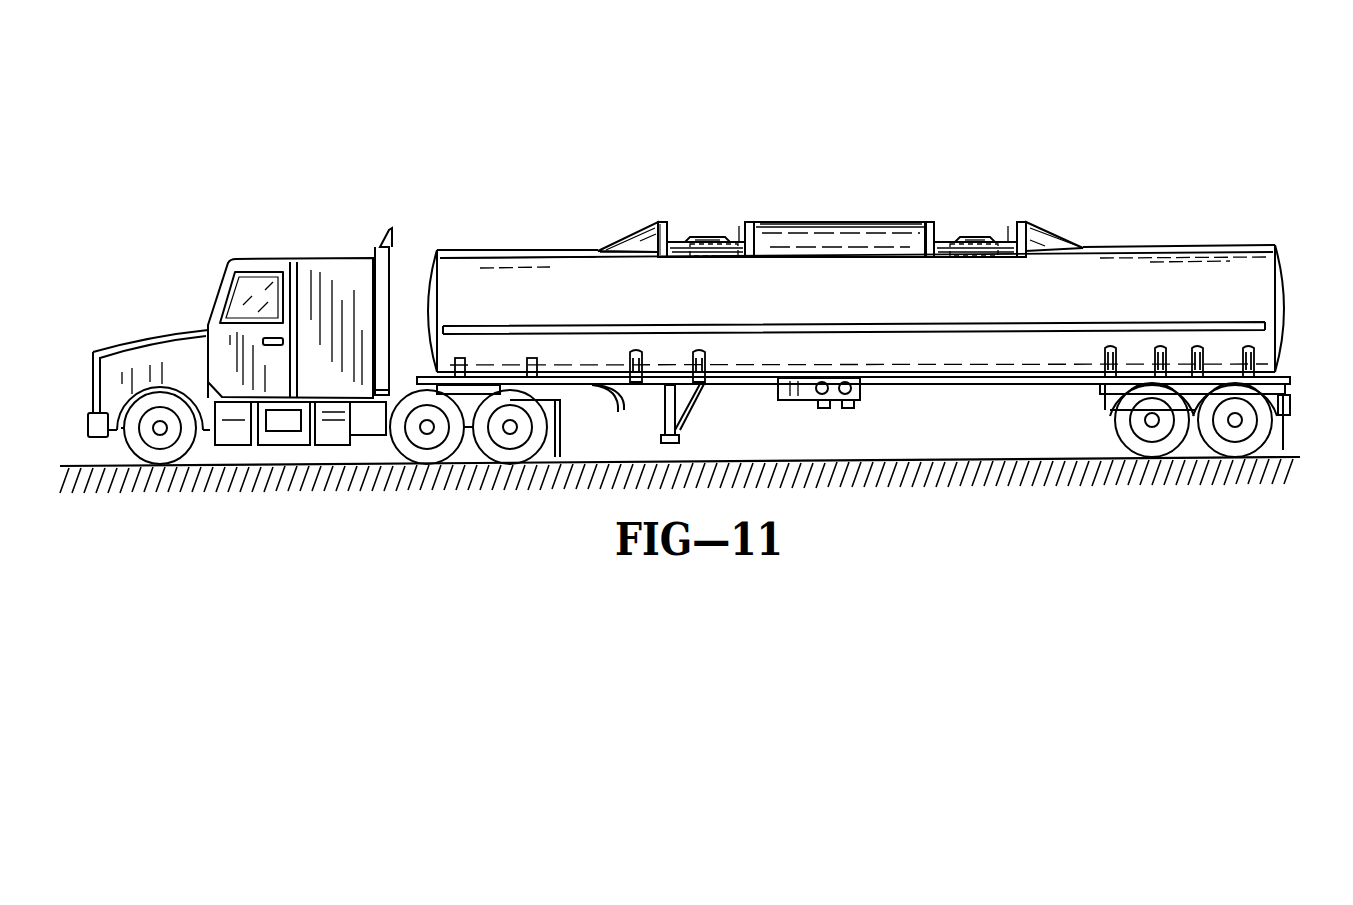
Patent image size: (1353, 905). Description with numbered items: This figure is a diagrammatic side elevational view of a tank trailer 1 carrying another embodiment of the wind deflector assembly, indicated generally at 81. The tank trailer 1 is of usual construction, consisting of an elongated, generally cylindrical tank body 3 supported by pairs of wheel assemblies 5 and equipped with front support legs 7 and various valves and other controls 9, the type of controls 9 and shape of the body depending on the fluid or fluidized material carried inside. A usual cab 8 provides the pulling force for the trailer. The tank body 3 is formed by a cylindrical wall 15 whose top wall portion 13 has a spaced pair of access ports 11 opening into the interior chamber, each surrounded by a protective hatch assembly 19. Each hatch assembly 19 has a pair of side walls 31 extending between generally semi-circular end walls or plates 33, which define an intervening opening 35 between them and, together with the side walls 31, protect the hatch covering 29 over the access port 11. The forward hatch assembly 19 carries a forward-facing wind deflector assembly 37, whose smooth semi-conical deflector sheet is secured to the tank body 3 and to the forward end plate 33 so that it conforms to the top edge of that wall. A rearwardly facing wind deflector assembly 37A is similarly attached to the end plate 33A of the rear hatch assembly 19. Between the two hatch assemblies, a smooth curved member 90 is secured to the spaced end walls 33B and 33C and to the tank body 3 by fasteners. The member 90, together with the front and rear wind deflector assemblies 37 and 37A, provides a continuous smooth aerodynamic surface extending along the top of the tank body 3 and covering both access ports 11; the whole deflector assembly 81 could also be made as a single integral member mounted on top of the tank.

The tank trailer 1 is at (1215, 235).
The tank body 3 is at (472, 245).
The wheel assemblies 5 is at (1152, 457).
The front support legs 7 is at (663, 428).
The cab 8 is at (206, 287).
The valves and other controls 9 is at (800, 407).
The access port 11 is at (708, 258).
The top wall portion 13 is at (517, 197).
The cylindrical wall 15 is at (507, 246).
The hatch assembly 19 is at (687, 225).
The hatch covering 29 is at (700, 237).
The side walls 31 is at (741, 258).
The end walls 33 is at (606, 212).
The end plate 33A is at (1021, 216).
The end wall 33B is at (752, 220).
The end wall 33C is at (922, 218).
The intervening opening 35 is at (741, 232).
The wind deflector assembly 37 is at (588, 226).
The rearwardly facing wind deflector assembly 37A is at (1048, 226).
The wind deflector assembly 81 is at (860, 164).
The smooth curved member 90 is at (818, 221).